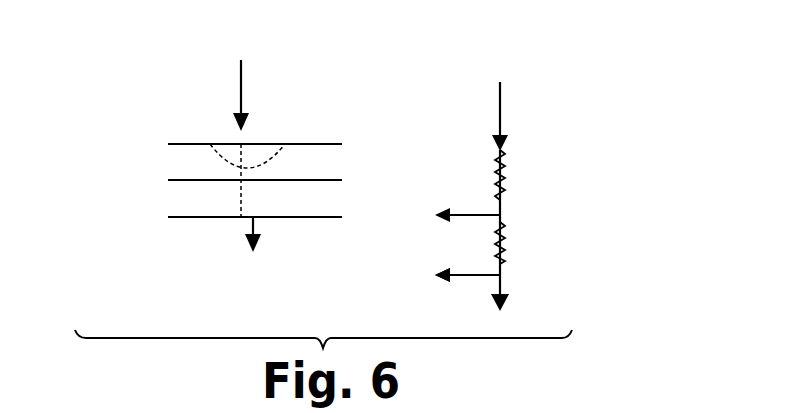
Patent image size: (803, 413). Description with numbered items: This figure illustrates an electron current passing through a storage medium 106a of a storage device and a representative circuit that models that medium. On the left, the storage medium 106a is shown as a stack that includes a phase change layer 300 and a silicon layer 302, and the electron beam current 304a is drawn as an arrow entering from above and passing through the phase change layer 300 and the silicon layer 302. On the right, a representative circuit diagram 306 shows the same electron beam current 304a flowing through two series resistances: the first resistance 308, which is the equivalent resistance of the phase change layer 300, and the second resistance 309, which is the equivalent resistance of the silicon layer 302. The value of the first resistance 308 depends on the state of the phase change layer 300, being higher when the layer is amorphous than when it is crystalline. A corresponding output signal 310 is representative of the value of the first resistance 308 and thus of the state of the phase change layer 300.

The storage medium 106a is at (160, 100).
The phase change layer 300 is at (177, 163).
The silicon layer 302 is at (177, 198).
The electron beam current 304a is at (243, 80).
The circuit diagram 306 is at (626, 102).
The resistance R1 308 is at (494, 183).
The resistance R2 309 is at (495, 248).
The output signal Vout 310 is at (406, 291).